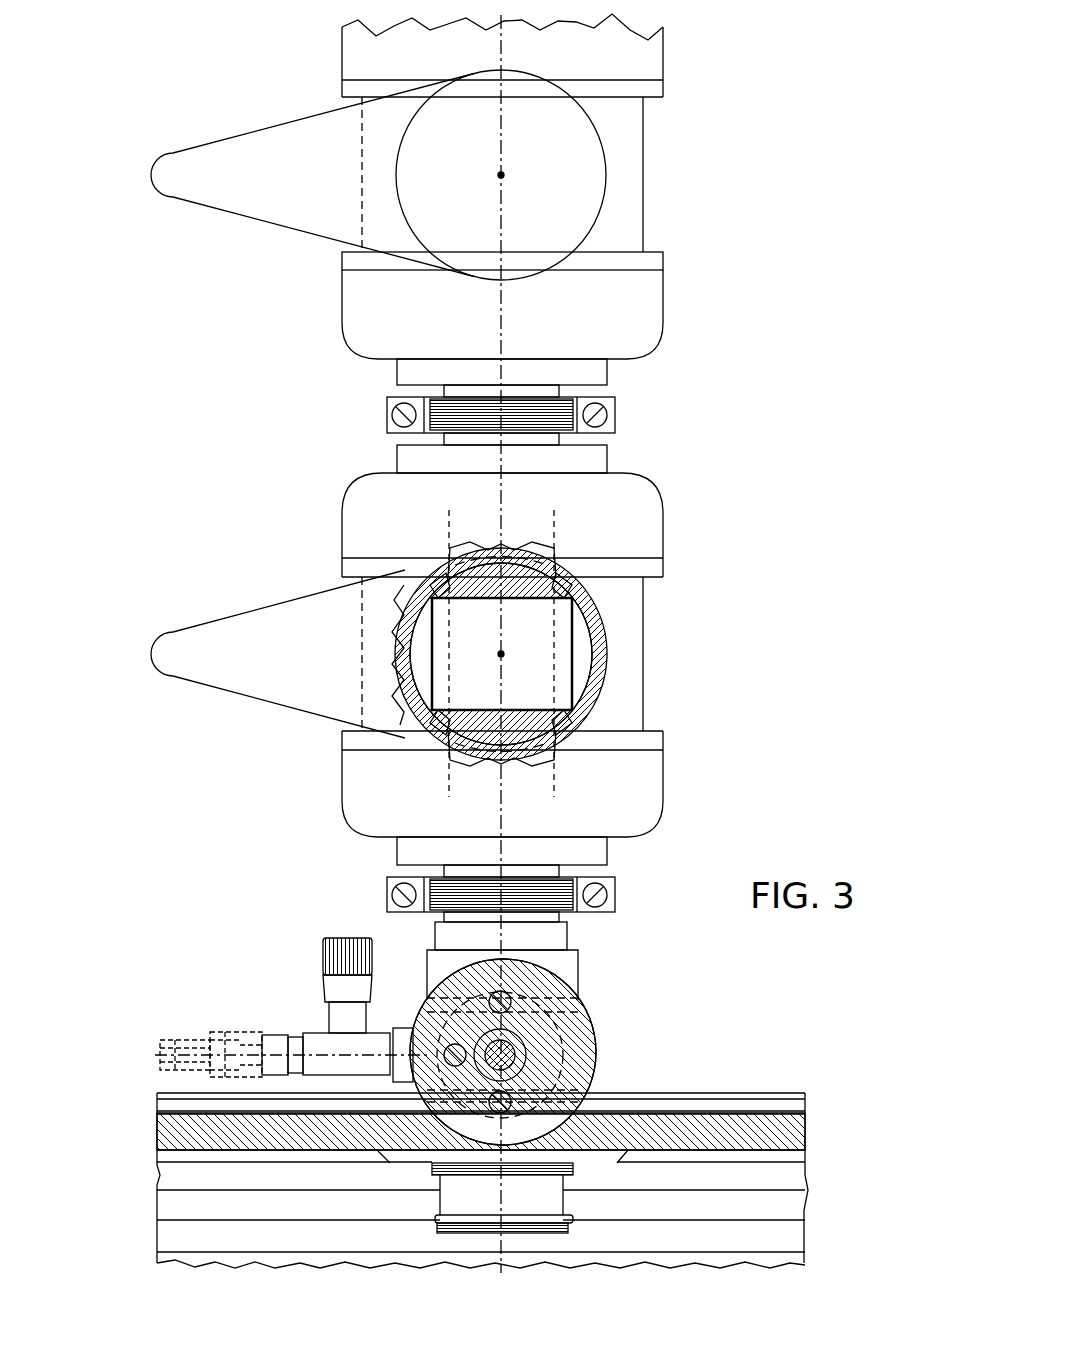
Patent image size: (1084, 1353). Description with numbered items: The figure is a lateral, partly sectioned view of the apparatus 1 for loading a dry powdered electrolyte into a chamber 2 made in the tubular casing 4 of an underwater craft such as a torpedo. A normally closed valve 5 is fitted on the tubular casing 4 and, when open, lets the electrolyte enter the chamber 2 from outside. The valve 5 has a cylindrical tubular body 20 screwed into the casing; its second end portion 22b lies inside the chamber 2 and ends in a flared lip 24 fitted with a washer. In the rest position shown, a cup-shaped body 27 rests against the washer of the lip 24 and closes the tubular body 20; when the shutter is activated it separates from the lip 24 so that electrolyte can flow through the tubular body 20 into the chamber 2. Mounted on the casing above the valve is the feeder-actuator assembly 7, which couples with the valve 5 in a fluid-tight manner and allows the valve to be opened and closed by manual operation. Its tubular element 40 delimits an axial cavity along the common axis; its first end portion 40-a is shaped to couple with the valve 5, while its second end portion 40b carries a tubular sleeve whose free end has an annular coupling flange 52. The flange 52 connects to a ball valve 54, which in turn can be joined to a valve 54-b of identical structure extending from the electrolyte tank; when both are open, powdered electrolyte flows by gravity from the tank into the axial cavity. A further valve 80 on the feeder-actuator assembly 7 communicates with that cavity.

The apparatus for loading a dry powdered electrolyte 1 is at (738, 488).
The chamber 2 is at (762, 1168).
The tubular casing 4 is at (780, 1080).
The valve 5 is at (405, 1185).
The feeder-actuator assembly 7 is at (596, 996).
The cylindrical tubular body 20 is at (572, 1198).
The second end portion 22b is at (420, 1212).
The flared lip 24 is at (435, 1222).
The cup-shaped body 27 is at (554, 1233).
The tubular element 40 is at (602, 1046).
The first end portion 40-a is at (607, 1087).
The second end portion 40b is at (393, 930).
The annular coupling flange 52 is at (576, 916).
The valve 54 is at (660, 630).
The valve 54-b is at (672, 178).
The valve 80 is at (272, 1030).